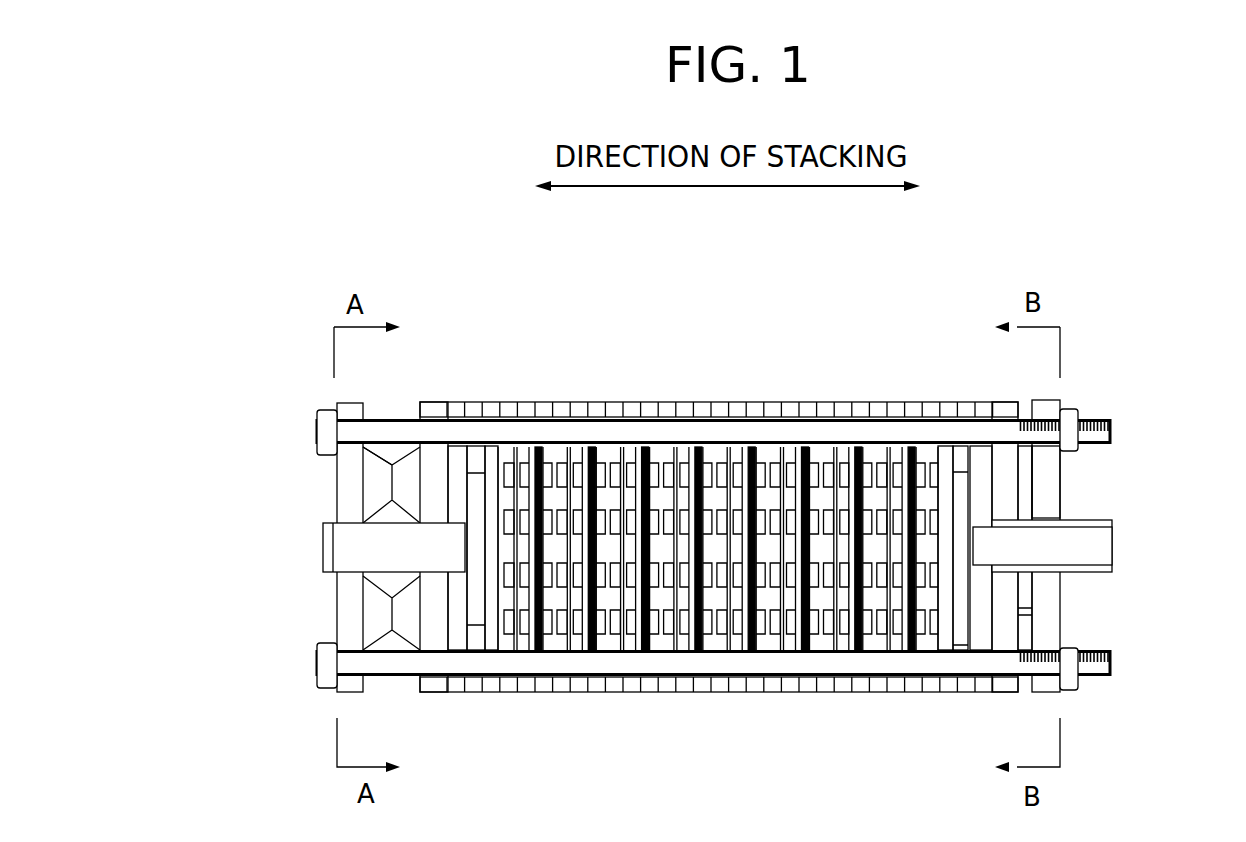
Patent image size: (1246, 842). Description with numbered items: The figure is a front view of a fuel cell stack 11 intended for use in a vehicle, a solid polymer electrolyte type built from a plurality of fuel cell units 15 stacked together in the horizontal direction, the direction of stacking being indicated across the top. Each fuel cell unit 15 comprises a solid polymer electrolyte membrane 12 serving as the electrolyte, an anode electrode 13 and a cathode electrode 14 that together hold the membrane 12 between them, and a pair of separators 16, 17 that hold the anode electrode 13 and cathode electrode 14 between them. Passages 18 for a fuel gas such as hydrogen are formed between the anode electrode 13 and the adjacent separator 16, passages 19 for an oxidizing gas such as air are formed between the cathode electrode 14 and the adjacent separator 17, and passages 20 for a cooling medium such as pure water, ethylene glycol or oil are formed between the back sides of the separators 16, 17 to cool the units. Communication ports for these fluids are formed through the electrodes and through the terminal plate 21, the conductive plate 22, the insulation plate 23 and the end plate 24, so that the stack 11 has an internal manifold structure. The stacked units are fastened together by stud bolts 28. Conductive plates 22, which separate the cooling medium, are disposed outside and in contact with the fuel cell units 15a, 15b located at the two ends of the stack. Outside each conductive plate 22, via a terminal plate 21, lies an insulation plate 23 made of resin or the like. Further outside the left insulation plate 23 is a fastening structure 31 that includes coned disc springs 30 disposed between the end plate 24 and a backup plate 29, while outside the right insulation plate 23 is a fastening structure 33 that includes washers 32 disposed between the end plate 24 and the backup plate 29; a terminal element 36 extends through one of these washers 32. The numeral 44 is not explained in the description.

The fuel cell stack 11 is at (760, 496).
The solid polymer electrolyte membrane 12 is at (860, 490).
The anode electrode 13 is at (878, 495).
The cathode electrode 14 is at (838, 500).
The fuel cell unit 15 is at (750, 290).
The fuel cell unit 15a is at (546, 449).
The fuel cell unit 15b is at (916, 452).
The separator 16 is at (900, 490).
The separator 17 is at (816, 495).
The passages 18 is at (862, 624).
The passages 19 is at (843, 626).
The passages 20 is at (877, 614).
The terminal plate 21 is at (489, 444).
The conductive plate 22 is at (481, 440).
The insulation plate 23 is at (456, 455).
The end plate 24 is at (434, 642).
The stud bolts 28 is at (316, 666).
The backup plate 29 is at (343, 613).
The coned disc springs 30 is at (372, 476).
The fastening structure 31 is at (388, 440).
The washers 32 is at (1021, 487).
The fastening structure 33 is at (1055, 483).
The terminal element 36 is at (314, 553).
The holder 44 is at (394, 576).